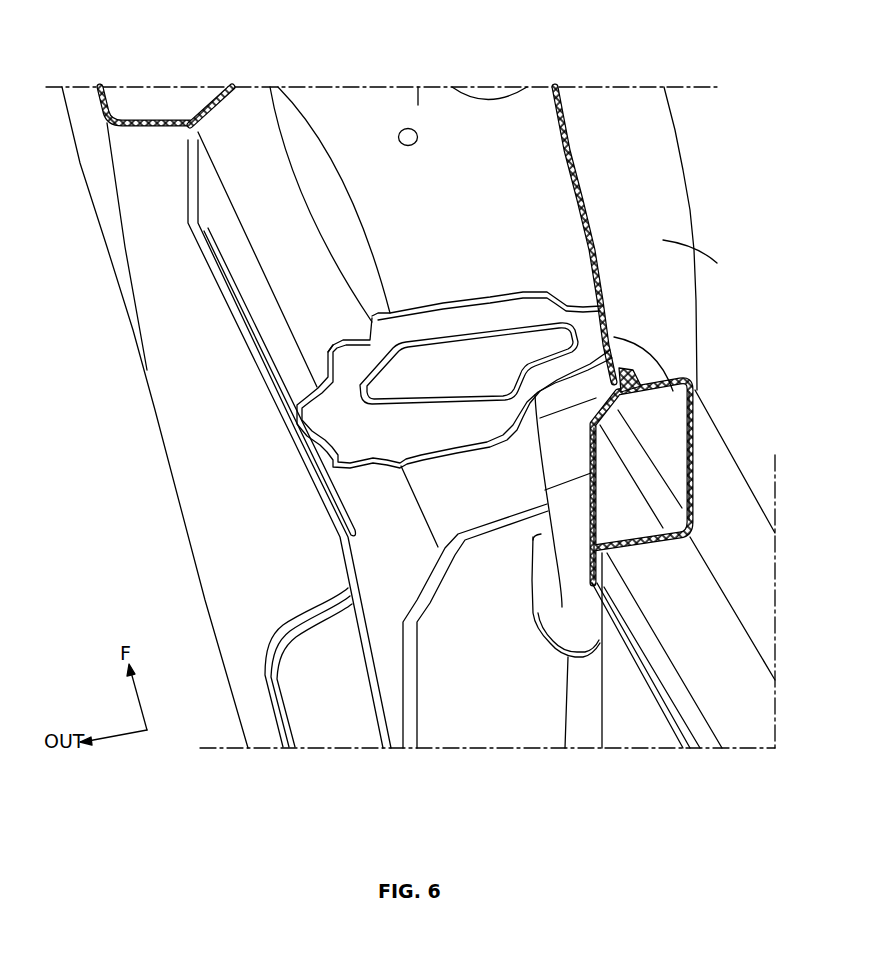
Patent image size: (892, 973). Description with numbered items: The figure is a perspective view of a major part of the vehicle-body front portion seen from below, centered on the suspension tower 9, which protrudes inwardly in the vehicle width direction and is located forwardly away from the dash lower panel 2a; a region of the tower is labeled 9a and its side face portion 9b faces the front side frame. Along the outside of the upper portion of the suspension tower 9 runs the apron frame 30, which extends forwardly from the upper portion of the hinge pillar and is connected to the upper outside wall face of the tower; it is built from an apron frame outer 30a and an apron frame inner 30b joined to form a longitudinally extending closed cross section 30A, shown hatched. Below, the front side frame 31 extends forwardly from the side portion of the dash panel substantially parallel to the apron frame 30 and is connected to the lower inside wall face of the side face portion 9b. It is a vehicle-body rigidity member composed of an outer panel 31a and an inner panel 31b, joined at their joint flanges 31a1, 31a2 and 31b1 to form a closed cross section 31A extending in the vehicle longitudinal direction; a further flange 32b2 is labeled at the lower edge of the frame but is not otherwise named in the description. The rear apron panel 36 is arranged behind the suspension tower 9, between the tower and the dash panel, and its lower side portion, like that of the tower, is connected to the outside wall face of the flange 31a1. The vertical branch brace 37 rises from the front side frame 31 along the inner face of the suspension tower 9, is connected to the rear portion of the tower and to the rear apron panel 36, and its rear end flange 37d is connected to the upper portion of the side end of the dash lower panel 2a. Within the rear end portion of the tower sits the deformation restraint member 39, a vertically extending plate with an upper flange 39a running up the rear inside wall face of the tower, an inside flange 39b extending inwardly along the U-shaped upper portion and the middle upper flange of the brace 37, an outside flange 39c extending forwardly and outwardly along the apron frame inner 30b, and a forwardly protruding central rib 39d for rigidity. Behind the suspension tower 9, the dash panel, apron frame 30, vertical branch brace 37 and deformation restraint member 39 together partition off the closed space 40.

The dash lower panel 2a is at (498, 722).
The suspension tower 9 is at (683, 170).
The roof side rail upper surface 9a is at (418, 87).
The side face portion 9b is at (702, 262).
The apron frame 30 is at (193, 475).
The closed cross section 30A is at (158, 108).
The apron frame outer 30a is at (145, 208).
The apron frame inner 30b is at (290, 183).
The front side frame 31 is at (702, 402).
The closed cross section 31A is at (663, 436).
The outer panel 31a is at (589, 460).
The joint flange 31a1 is at (628, 352).
The joint flange 31a2 is at (598, 575).
The inner panel 31b is at (693, 460).
The joint flange 31b1 is at (640, 373).
The lower flange 32b2 is at (600, 572).
The rear apron panel 36 is at (582, 732).
The vertical branch brace 37 is at (534, 475).
The rear end flange 37d is at (568, 628).
The deformation restraint member 39 is at (405, 438).
The upper flange 39a is at (460, 310).
The inside flange 39b is at (590, 322).
The outside flange 39c is at (348, 353).
The rib 39d is at (503, 345).
The closed space 40 is at (480, 486).